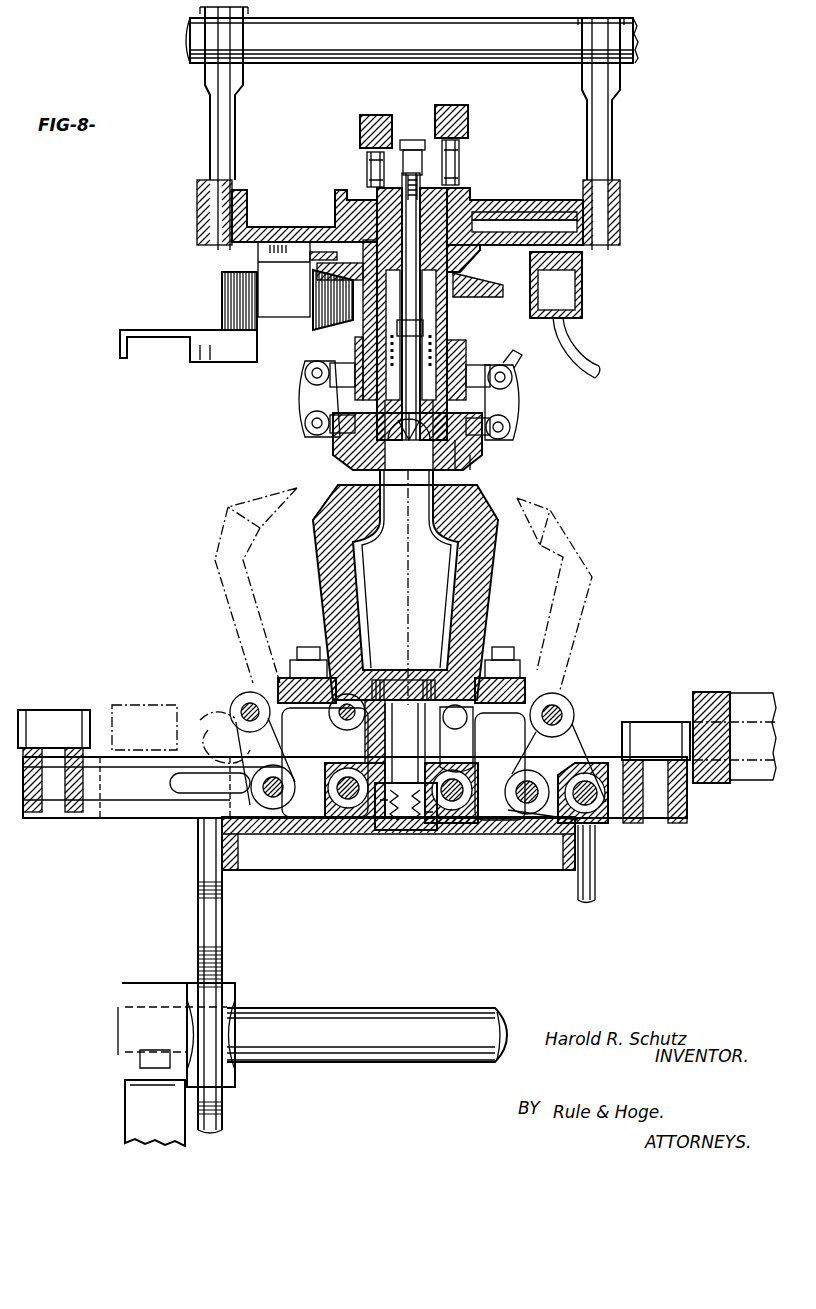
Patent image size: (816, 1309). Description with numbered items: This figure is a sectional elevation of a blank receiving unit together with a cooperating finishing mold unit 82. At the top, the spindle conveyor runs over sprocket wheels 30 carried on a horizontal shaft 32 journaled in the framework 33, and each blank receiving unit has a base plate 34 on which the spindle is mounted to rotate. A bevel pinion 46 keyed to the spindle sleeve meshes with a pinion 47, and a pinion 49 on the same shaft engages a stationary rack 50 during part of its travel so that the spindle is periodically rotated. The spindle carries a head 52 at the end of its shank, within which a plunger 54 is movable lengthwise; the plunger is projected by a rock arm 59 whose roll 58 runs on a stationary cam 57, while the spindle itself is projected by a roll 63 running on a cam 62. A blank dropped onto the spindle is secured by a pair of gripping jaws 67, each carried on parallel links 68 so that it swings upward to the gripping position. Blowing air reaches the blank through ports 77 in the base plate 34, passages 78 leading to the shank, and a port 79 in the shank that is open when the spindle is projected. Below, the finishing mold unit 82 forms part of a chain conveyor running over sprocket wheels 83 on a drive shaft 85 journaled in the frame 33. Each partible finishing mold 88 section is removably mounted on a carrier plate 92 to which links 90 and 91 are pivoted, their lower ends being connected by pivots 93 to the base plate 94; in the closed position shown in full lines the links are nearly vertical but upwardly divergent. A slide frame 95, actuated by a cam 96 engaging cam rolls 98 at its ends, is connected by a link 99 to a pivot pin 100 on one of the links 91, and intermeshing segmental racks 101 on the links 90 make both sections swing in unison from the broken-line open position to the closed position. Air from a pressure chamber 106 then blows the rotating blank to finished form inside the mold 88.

The sprocket wheels 30 is at (238, 128).
The horizontal shaft 32 is at (332, 45).
The framework 33 is at (140, 1110).
The base plate 34 is at (284, 202).
The bevel pinion 46 is at (495, 298).
The pinion 47 is at (331, 322).
The pinion 49 is at (232, 285).
The stationary rack 50 is at (218, 330).
The spindle head 52 is at (346, 446).
The plunger 54 is at (428, 350).
The stationary cam 57 is at (468, 116).
The roll 58 is at (460, 154).
The rock arm 59 is at (414, 168).
The cam 62 is at (360, 136).
The roll 63 is at (370, 167).
The gripping jaws 67 is at (481, 458).
The parallel links 68 is at (510, 410).
The ports 77 is at (553, 232).
The passages 78 is at (510, 225).
The port 79 is at (455, 235).
The finishing mold unit 82 is at (571, 677).
The sprocket wheels 83 is at (215, 972).
The shaft 85 is at (419, 1016).
The finishing mold 88 is at (478, 512).
The links 90 is at (324, 764).
The links 91 is at (246, 738).
The carrier plate 92 is at (300, 685).
The pivots 93 is at (455, 826).
The base plate 94 is at (546, 870).
The slide frame 95 is at (160, 800).
The cam 96 is at (706, 692).
The cam rolls 98 is at (85, 712).
The link 99 is at (600, 823).
The pivot pin 100 is at (557, 715).
The segmental racks 101 is at (406, 832).
The pressure chamber 106 is at (583, 296).